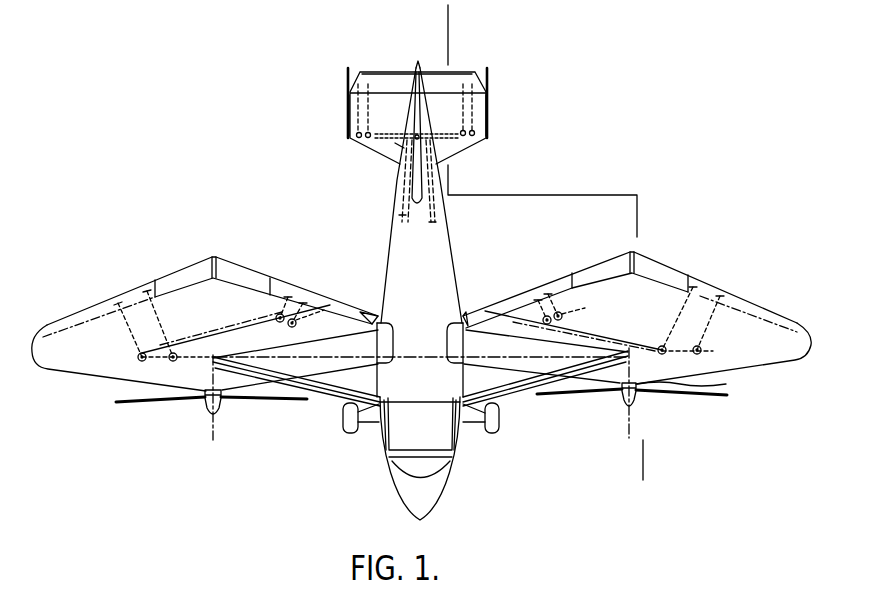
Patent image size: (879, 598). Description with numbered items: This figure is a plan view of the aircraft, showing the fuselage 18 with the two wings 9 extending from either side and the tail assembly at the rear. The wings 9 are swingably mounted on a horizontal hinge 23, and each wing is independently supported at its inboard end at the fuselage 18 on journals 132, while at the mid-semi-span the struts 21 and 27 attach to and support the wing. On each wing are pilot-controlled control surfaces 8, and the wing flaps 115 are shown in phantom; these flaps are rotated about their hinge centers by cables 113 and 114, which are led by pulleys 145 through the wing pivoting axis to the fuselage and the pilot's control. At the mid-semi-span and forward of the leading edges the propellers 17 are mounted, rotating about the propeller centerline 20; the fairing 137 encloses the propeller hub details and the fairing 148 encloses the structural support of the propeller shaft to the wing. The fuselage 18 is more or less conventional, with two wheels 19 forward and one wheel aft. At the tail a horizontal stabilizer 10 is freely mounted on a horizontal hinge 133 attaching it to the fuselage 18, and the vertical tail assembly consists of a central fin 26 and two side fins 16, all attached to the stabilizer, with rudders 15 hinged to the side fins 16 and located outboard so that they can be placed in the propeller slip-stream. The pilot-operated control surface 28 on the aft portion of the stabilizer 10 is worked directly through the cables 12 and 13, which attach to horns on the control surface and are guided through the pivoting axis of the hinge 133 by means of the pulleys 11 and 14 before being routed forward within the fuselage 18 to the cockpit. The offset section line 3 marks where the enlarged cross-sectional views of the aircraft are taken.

The offset section line 3 is at (448, 11).
The control surfaces 8 is at (193, 265).
The wings 9 is at (110, 372).
The horizontal stabilizer 10 is at (378, 152).
The pulley 11 is at (354, 137).
The cable 12 is at (406, 214).
The cable 13 is at (404, 224).
The pulley 14 is at (373, 146).
The rudders 15 is at (348, 77).
The side fins 16 is at (348, 110).
The propellers 17 is at (253, 402).
The fuselage 18 is at (438, 252).
The wheels 19 is at (352, 435).
The propeller centerline 20 is at (212, 436).
The strut 21 is at (342, 395).
The horizontal hinge 23 is at (346, 365).
The central fin 26 is at (417, 65).
The strut 27 is at (363, 312).
The control surface 28 is at (368, 78).
The cable 113 is at (247, 345).
The cable 114 is at (201, 332).
The wing flap 115 is at (110, 305).
The journals 132 is at (376, 332).
The horizontal hinge 133 is at (395, 145).
The fairing 137 is at (627, 408).
The pulleys 145 is at (138, 355).
The fairing 148 is at (695, 383).